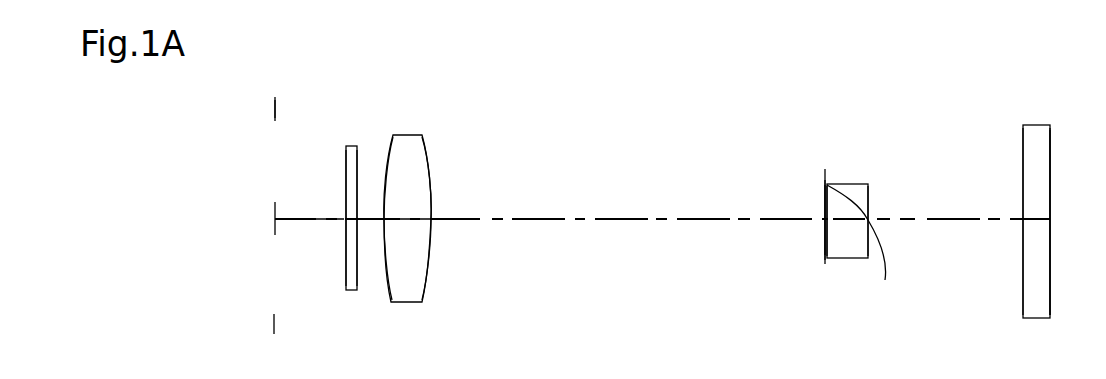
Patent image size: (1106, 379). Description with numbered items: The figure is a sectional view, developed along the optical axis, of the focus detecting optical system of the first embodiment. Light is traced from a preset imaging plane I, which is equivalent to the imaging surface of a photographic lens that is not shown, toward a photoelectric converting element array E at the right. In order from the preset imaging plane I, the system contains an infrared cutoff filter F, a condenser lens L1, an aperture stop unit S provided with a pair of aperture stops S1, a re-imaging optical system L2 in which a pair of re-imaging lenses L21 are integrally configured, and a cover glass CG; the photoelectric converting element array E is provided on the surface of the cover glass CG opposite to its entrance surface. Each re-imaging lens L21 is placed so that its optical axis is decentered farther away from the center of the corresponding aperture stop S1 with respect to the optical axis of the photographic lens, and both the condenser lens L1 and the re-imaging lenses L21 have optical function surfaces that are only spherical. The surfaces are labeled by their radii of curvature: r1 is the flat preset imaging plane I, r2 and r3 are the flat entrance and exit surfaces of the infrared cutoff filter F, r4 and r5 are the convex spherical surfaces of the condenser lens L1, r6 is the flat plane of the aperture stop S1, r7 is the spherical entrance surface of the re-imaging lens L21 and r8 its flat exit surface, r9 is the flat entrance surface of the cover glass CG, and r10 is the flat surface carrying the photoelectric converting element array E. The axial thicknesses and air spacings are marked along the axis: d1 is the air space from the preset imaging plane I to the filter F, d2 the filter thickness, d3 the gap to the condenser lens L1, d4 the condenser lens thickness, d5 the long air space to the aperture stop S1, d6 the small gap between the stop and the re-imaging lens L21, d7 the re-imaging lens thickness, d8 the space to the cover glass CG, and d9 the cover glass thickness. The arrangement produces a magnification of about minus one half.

The preset imaging plane I is at (272, 330).
The infrared cutoff filter F is at (350, 293).
The condenser lens L1 is at (408, 307).
The aperture stop unit S is at (826, 264).
The aperture stop S1 is at (826, 200).
The re-imaging optical system L2 is at (903, 320).
The re-imaging lens L21 is at (885, 278).
The cover glass CG is at (1033, 320).
The photoelectric converting element array E is at (1050, 285).
The radius of curvature of first surface r1 is at (275, 107).
The radius of curvature of second surface r2 is at (345, 153).
The radius of curvature of third surface r3 is at (359, 157).
The radius of curvature of fourth surface r4 is at (393, 140).
The radius of curvature of fifth surface r5 is at (426, 143).
The radius of curvature of sixth surface r6 is at (824, 183).
The radius of curvature of seventh surface r7 is at (827, 188).
The radius of curvature of eighth surface r8 is at (868, 189).
The radius of curvature of ninth surface r9 is at (1023, 153).
The radius of curvature of tenth surface r10 is at (1050, 132).
The air spacing d1 is at (327, 221).
The thickness d2 is at (352, 221).
The air spacing d3 is at (372, 221).
The thickness d4 is at (413, 221).
The air spacing d5 is at (655, 221).
The air spacing d6 is at (824, 227).
The thickness d7 is at (847, 221).
The air spacing d8 is at (958, 222).
The thickness d9 is at (1037, 221).